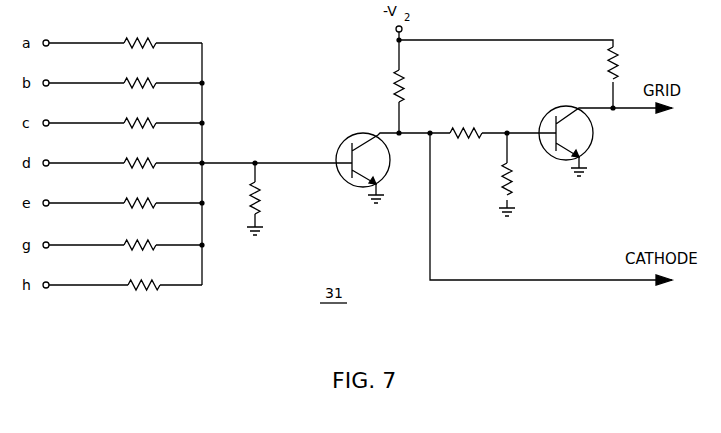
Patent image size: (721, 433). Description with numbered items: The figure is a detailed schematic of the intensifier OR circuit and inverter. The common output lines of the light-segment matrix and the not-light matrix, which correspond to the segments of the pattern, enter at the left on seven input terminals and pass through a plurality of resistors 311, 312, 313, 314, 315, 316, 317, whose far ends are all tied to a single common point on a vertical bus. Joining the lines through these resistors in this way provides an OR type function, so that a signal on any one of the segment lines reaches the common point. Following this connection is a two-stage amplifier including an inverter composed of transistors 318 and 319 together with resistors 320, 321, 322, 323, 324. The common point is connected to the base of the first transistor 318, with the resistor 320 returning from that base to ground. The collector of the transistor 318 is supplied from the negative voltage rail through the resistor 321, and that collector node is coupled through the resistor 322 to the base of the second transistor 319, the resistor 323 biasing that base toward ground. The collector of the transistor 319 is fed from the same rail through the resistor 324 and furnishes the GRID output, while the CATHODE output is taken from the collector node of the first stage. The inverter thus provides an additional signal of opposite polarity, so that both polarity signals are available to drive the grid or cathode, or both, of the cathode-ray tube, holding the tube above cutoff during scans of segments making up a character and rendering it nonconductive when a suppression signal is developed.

The resistor 311 is at (124, 42).
The resistor 312 is at (124, 82).
The resistor 313 is at (124, 122).
The resistor 314 is at (124, 162).
The resistor 315 is at (124, 202).
The resistor 316 is at (125, 243).
The resistor 317 is at (128, 284).
The transistor 318 is at (341, 146).
The transistor 319 is at (545, 120).
The resistor 320 is at (262, 200).
The resistor 321 is at (394, 92).
The resistor 322 is at (453, 128).
The resistor 323 is at (504, 185).
The resistor 324 is at (609, 78).